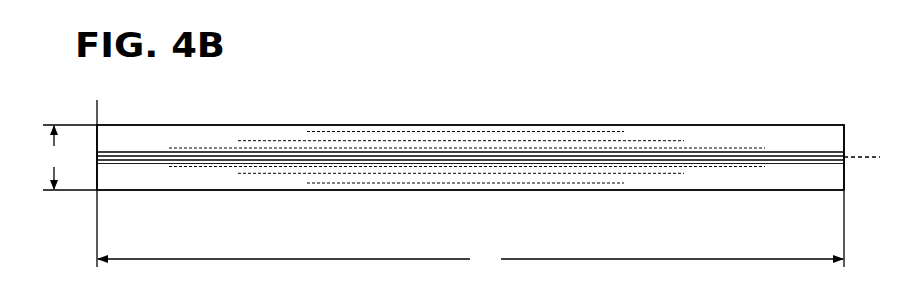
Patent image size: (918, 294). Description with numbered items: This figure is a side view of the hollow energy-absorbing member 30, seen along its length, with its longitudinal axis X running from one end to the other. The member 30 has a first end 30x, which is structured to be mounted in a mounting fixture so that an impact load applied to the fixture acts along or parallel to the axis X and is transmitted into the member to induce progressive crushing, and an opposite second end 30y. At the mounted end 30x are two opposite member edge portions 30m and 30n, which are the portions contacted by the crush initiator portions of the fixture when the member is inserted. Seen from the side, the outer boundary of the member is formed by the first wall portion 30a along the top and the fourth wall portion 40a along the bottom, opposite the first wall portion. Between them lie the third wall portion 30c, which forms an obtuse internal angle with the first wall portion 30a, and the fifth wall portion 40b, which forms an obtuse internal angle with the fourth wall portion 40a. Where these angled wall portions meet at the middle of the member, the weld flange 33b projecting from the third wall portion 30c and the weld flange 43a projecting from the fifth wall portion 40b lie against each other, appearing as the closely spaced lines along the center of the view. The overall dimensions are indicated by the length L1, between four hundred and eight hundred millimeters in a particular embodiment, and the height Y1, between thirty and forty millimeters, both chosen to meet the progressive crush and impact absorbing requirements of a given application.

The energy-absorbing member 30 is at (90, 177).
The member edge portion 30m is at (97, 106).
The member edge portion 30n is at (96, 191).
The end of the member 30x is at (98, 138).
The end of the member 30y is at (846, 124).
The first wall portion 30a is at (334, 124).
The third wall portion 30c is at (632, 140).
The weld flange 33b is at (492, 152).
The weld flange 43a is at (470, 103).
The fourth wall portion 40a is at (258, 191).
The fifth wall portion 40b is at (500, 178).
The height dimension Y1 is at (70, 157).
The length dimension L1 is at (470, 259).
The longitudinal axis X is at (875, 160).